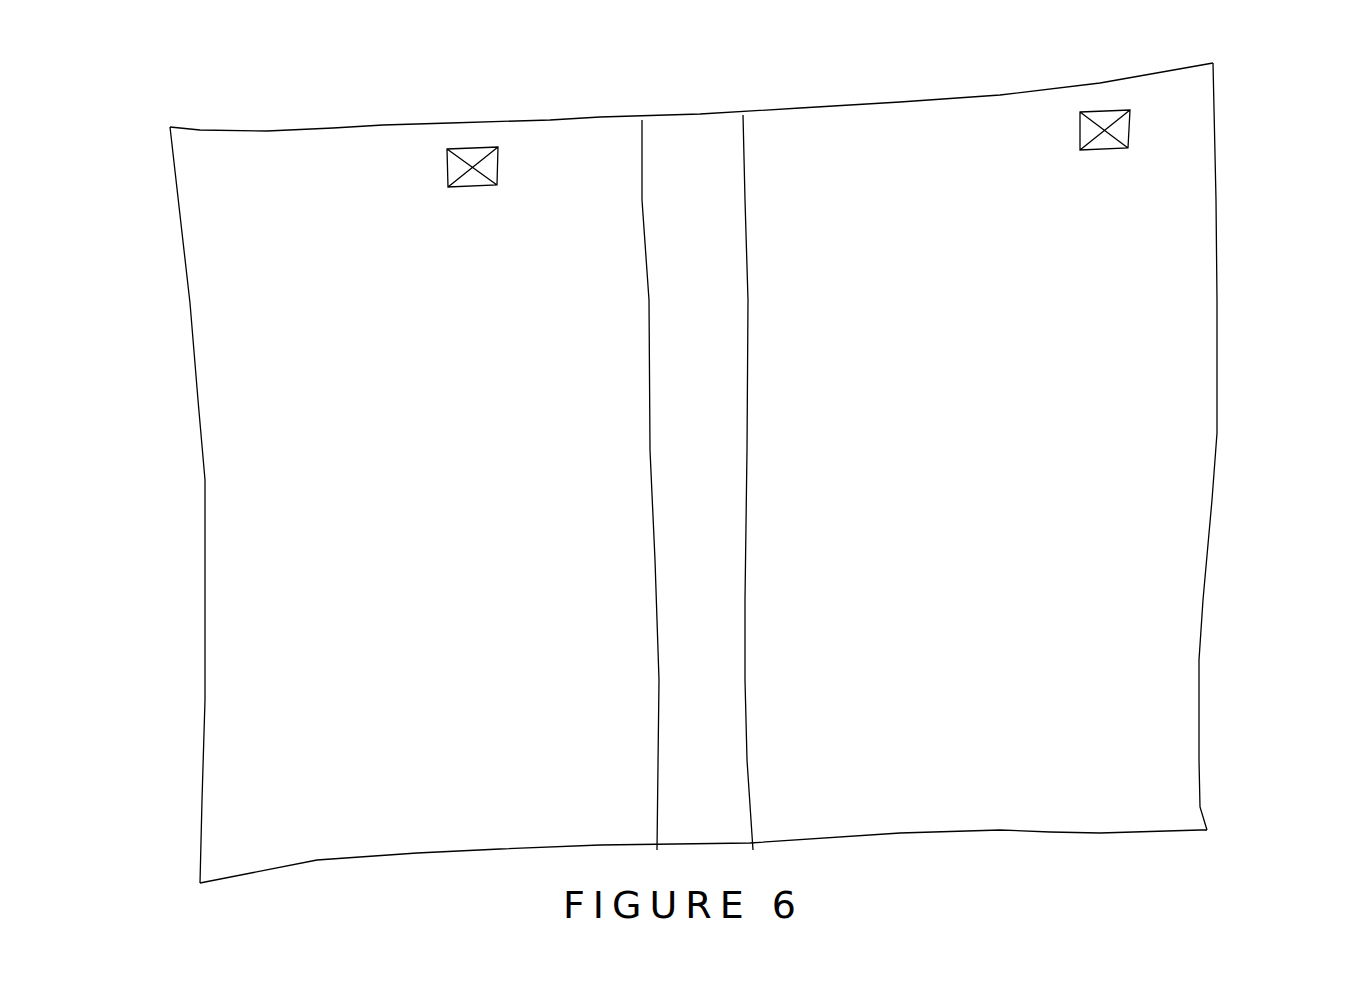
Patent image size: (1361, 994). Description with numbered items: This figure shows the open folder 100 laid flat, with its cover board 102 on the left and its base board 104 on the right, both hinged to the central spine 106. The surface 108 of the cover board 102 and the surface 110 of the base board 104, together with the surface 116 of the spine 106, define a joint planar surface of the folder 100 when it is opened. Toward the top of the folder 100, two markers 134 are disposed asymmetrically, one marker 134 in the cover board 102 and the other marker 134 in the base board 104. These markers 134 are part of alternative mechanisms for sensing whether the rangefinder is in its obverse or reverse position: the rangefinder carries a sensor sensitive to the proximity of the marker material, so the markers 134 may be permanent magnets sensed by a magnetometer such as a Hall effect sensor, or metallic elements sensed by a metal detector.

The folder 100 is at (1249, 109).
The cover board 102 is at (190, 303).
The base board 104 is at (1217, 299).
The spine 106 is at (694, 117).
The surface of cover board 108 is at (420, 748).
The surface of base board 110 is at (965, 727).
The surface of spine 116 is at (718, 736).
The marker 134 is at (472, 187).